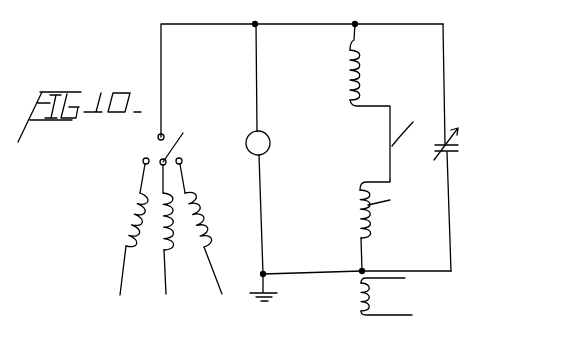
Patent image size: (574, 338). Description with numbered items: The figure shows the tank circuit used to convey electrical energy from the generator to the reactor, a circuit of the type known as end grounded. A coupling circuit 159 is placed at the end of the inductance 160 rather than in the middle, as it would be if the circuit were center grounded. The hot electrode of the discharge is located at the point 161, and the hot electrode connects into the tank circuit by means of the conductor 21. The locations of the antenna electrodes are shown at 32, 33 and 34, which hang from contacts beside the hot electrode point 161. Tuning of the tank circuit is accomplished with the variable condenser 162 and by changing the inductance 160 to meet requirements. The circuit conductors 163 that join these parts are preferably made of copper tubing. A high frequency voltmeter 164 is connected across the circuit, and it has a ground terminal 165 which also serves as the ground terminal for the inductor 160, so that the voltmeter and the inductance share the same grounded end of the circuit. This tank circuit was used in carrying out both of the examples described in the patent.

The conductor 21 is at (161, 50).
The hot electrode location 161 is at (157, 137).
The antenna electrode 32 is at (143, 162).
The antenna electrode 33 is at (185, 205).
The antenna electrode 34 is at (182, 161).
The inductance 160 is at (368, 71).
The high frequency voltmeter 164 is at (270, 143).
The variable condenser 162 is at (461, 155).
The circuit conductors 163 is at (300, 269).
The ground terminal 165 is at (250, 303).
The coupling circuit 159 is at (345, 302).